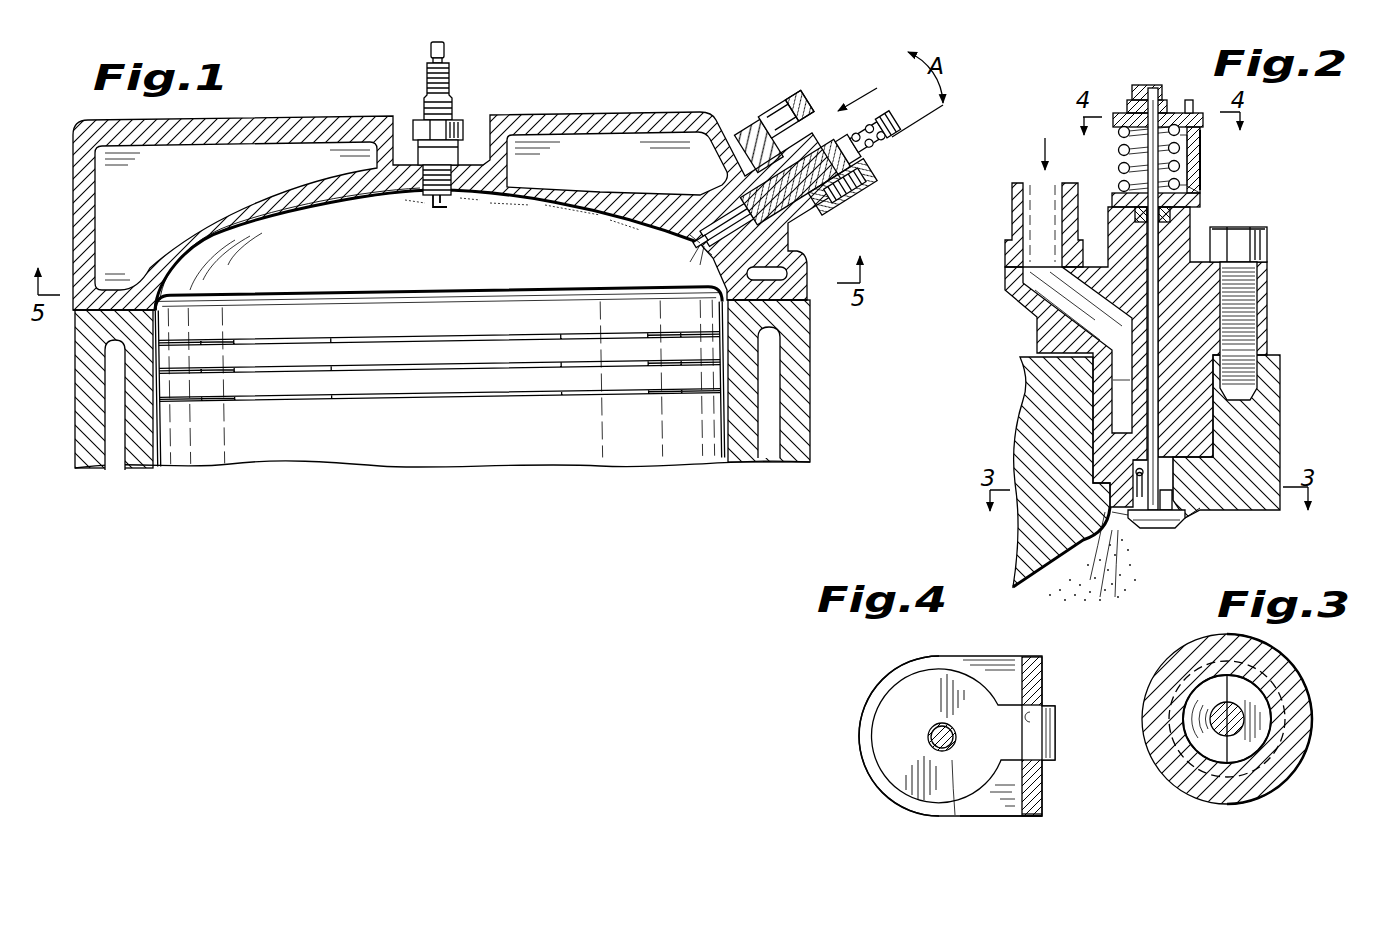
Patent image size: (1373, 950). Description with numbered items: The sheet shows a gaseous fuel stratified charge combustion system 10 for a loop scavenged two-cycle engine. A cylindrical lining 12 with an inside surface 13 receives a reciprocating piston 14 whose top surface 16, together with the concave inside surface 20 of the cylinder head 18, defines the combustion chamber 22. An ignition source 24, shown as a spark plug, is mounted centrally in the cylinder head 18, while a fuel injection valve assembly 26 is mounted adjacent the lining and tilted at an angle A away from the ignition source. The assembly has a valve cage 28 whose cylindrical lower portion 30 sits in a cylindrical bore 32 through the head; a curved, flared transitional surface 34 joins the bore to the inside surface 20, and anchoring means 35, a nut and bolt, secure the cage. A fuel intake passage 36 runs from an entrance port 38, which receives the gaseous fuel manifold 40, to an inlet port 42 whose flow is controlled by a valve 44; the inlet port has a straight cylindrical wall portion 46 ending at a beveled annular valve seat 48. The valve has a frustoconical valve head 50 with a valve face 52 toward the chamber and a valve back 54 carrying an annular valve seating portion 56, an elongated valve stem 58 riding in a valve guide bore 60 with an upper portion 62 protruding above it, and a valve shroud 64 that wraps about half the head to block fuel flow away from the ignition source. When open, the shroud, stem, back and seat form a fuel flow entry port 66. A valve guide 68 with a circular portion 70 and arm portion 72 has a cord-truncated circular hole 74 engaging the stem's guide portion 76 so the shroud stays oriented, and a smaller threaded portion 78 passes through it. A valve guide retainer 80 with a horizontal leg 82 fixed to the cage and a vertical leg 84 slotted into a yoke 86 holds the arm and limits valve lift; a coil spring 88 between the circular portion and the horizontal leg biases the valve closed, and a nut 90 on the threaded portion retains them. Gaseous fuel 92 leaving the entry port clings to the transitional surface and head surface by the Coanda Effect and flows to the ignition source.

In FIG. 1, the gaseous fuel stratified charge combustion system 10 is at (597, 86).
In FIG. 1, the cylindrical lining 12 is at (75, 385).
In FIG. 1, the inside surface 13 is at (160, 443).
In FIG. 1, the piston 14 is at (411, 437).
In FIG. 1, the top surface 16 is at (432, 290).
In FIG. 1, the cylinder head 18 is at (348, 128).
In FIG. 1, the concave inside surface 20 is at (332, 198).
In FIG. 1, the combustion chamber 22 is at (534, 254).
In FIG. 1, the ignition source 24 is at (483, 118).
In FIG. 1, the fuel injection valve assembly 26 is at (852, 196).
In FIG. 2, the fuel injection valve assembly 26 is at (1046, 106).
In FIG. 2, the valve cage 28 is at (1185, 282).
In FIG. 2, the cylindrical lower portion 30 is at (1197, 438).
In FIG. 3, the cylindrical lower portion 30 is at (1300, 722).
In FIG. 2, the cylindrical bore 32 is at (1103, 380).
In FIG. 1, the transitional surface 34 is at (690, 232).
In FIG. 2, the transitional surface 34 is at (1108, 540).
In FIG. 2, the anchoring means 35 is at (1270, 250).
In FIG. 2, the fuel intake passage 36 is at (1122, 333).
In FIG. 2, the entrance port 38 is at (1047, 297).
In FIG. 2, the gaseous fuel manifold 40 is at (1033, 212).
In FIG. 2, the inlet port 42 is at (1143, 462).
In FIG. 1, the valve 44 is at (712, 252).
In FIG. 2, the valve 44 is at (1175, 462).
In FIG. 2, the straight cylindrical wall portion 46 is at (1134, 492).
In FIG. 2, the annular valve seat 48 is at (1087, 500).
In FIG. 2, the valve head 50 is at (1175, 532).
In FIG. 2, the valve face 52 is at (1162, 535).
In FIG. 2, the valve back 54 is at (1185, 515).
In FIG. 3, the valve back 54 is at (1213, 742).
In FIG. 2, the annular valve seating portion 56 is at (1144, 527).
In FIG. 3, the annular valve seating portion 56 is at (1183, 757).
In FIG. 2, the valve stem 58 is at (1212, 318).
In FIG. 3, the valve stem 58 is at (1237, 708).
In FIG. 2, the valve guide bore 60 is at (1243, 336).
In FIG. 2, the upper portion 62 is at (1200, 180).
In FIG. 2, the valve shroud 64 is at (1170, 467).
In FIG. 3, the valve shroud 64 is at (1263, 707).
In FIG. 1, the fuel flow entry port 66 is at (708, 236).
In FIG. 2, the fuel flow entry port 66 is at (1128, 530).
In FIG. 2, the valve guide 68 is at (1215, 108).
In FIG. 4, the valve guide 68 is at (952, 660).
In FIG. 2, the circular portion 70 is at (1120, 113).
In FIG. 4, the circular portion 70 is at (905, 765).
In FIG. 2, the arm portion 72 is at (1200, 112).
In FIG. 4, the arm portion 72 is at (1056, 722).
In FIG. 2, the cord-truncated circular hole 74 is at (1187, 147).
In FIG. 4, the cord-truncated circular hole 74 is at (952, 760).
In FIG. 2, the guide portion 76 is at (1165, 113).
In FIG. 4, the guide portion 76 is at (932, 730).
In FIG. 2, the threaded portion 78 is at (1142, 86).
In FIG. 4, the threaded portion 78 is at (935, 738).
In FIG. 2, the valve guide retainer 80 is at (1205, 168).
In FIG. 4, the valve guide retainer 80 is at (998, 820).
In FIG. 2, the horizontal leg 82 is at (1200, 192).
In FIG. 4, the horizontal leg 82 is at (908, 803).
In FIG. 2, the vertical leg 84 is at (1115, 201).
In FIG. 4, the vertical leg 84 is at (1042, 806).
In FIG. 2, the yoke 86 is at (1197, 133).
In FIG. 4, the yoke 86 is at (1035, 718).
In FIG. 2, the coil spring 88 is at (1127, 168).
In FIG. 2, the nut 90 is at (1152, 86).
In FIG. 1, the gaseous fuel 92 is at (565, 200).
In FIG. 2, the gaseous fuel 92 is at (1063, 577).